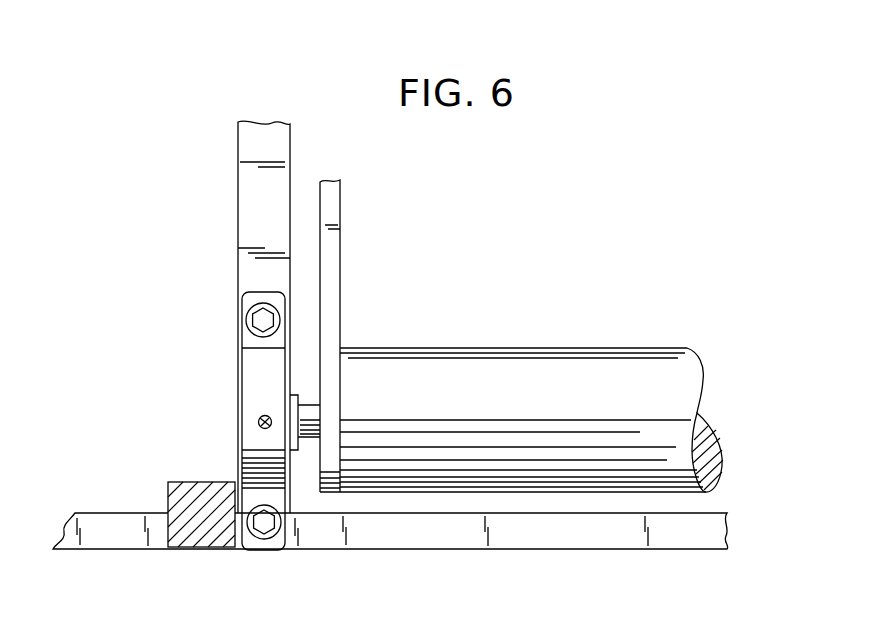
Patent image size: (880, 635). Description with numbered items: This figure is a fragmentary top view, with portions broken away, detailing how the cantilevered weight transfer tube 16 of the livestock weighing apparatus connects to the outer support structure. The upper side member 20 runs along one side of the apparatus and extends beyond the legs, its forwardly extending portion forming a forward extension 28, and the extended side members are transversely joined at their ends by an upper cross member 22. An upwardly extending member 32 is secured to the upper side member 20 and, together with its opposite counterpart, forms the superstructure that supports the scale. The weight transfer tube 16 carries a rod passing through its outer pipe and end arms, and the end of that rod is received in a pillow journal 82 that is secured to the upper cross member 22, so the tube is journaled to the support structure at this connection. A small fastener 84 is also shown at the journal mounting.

The cantilevered weight transfer tube 16 is at (670, 407).
The upper side member 20 is at (415, 530).
The cross member 22 is at (252, 265).
The forward extension 28 is at (124, 512).
The upwardly extending member 32 is at (196, 540).
The pillow journal 82 is at (246, 459).
The adjustment screw 84 is at (259, 418).